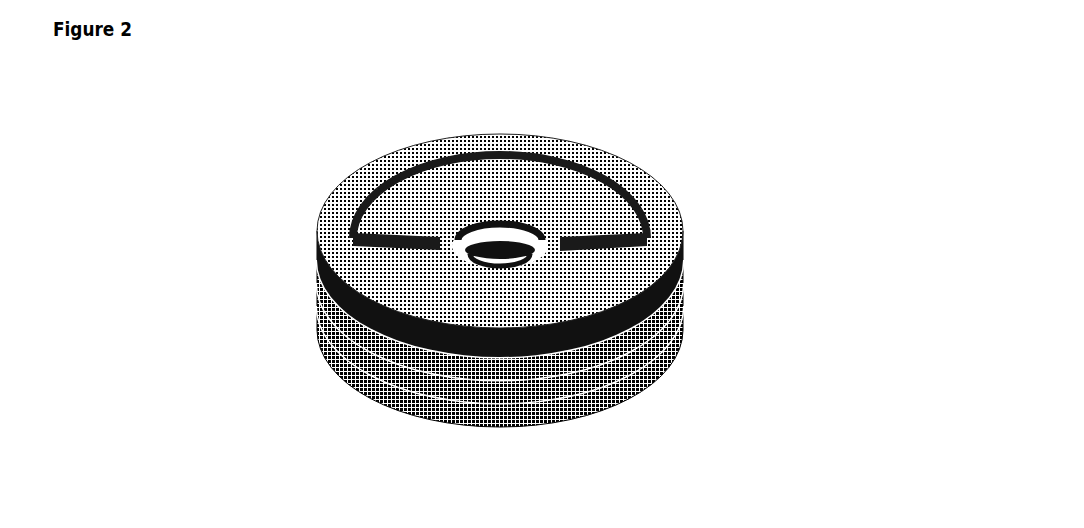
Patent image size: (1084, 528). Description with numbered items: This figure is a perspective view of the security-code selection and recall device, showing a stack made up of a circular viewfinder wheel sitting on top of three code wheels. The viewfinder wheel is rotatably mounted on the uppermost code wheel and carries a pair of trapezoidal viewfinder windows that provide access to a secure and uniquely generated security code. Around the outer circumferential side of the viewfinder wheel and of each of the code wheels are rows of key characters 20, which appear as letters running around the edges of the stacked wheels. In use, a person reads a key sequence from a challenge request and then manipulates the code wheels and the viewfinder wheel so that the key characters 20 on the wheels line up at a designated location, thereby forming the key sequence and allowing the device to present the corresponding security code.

The key characters 20 is at (359, 366).